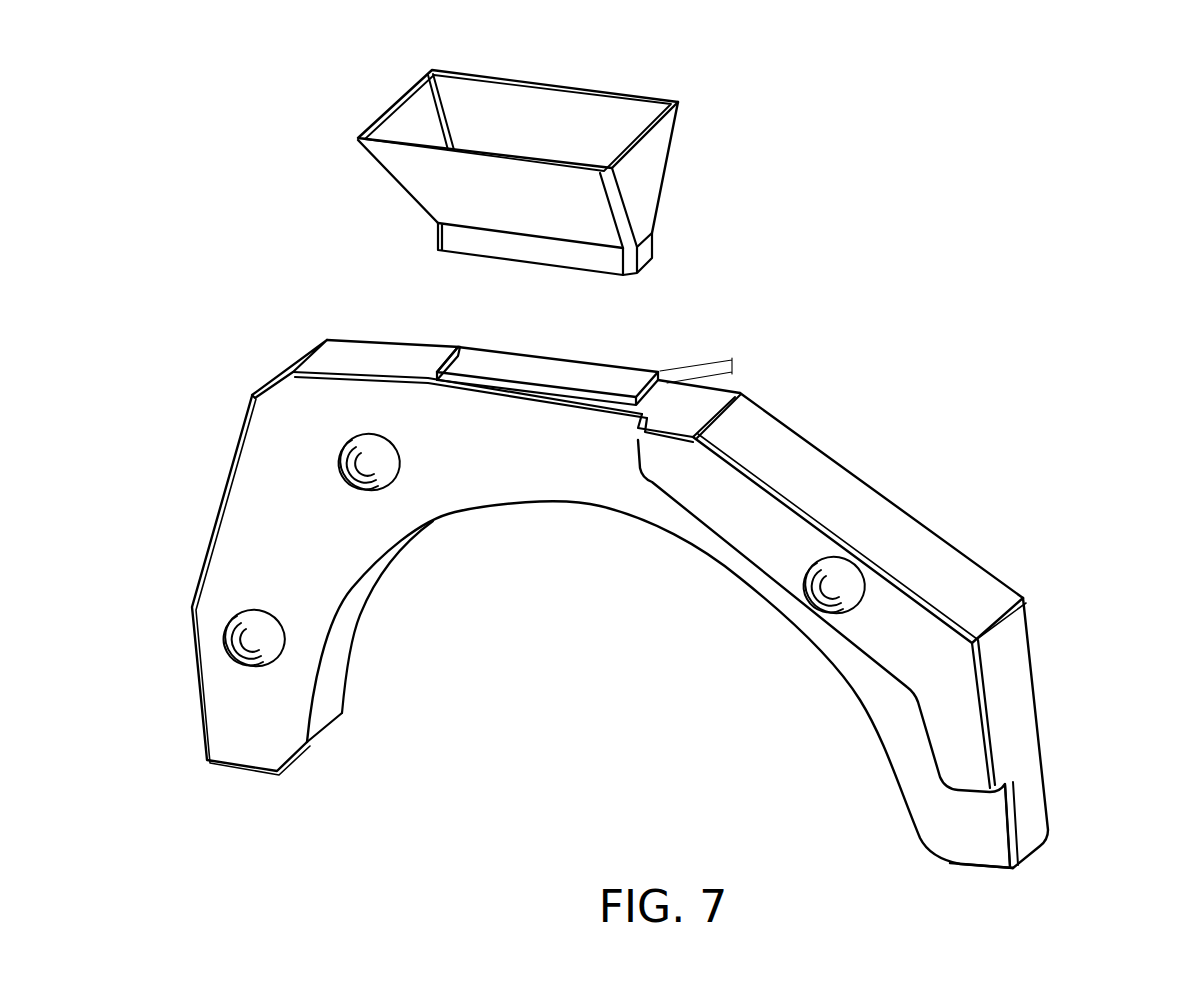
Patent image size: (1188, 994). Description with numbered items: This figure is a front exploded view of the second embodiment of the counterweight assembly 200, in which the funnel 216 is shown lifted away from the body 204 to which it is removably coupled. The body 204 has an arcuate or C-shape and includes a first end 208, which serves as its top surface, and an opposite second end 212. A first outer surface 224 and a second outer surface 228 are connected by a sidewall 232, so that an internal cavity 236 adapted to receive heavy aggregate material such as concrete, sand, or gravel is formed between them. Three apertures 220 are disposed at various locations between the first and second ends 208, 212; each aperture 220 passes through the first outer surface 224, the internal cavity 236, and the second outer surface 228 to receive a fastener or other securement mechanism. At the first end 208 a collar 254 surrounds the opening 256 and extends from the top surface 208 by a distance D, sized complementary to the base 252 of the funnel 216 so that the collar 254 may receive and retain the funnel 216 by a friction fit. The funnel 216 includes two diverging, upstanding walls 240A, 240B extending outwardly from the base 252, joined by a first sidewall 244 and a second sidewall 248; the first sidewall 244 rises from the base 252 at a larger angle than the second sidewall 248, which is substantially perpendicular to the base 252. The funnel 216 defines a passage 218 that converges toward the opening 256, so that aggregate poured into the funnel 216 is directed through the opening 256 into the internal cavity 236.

The counterweight assembly 200 is at (1008, 270).
The body 204 is at (597, 586).
The first end 208 is at (347, 357).
The second end 212 is at (242, 773).
The funnel 216 is at (698, 72).
The passage 218 is at (487, 106).
The aperture 220 is at (380, 457).
The first outer surface 224 is at (973, 842).
The second outer surface 228 is at (1036, 690).
The sidewall 232 is at (880, 503).
The internal cavity 236 is at (595, 378).
The upstanding wall 240A is at (588, 88).
The upstanding wall 240B is at (470, 209).
The first sidewall 244 is at (410, 118).
The second sidewall 248 is at (655, 165).
The base 252 is at (645, 250).
The collar 254 is at (455, 350).
The opening 256 is at (539, 347).
The distance D is at (734, 366).